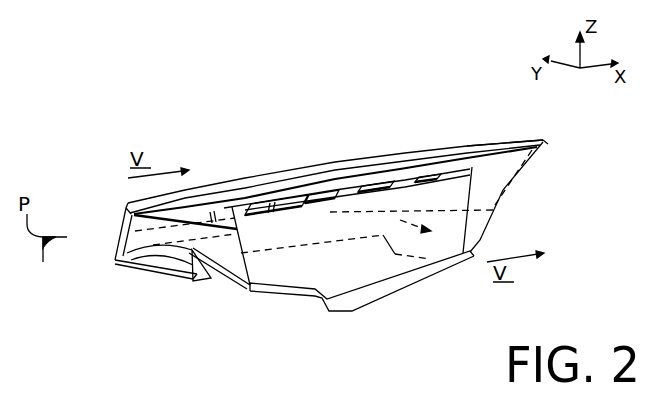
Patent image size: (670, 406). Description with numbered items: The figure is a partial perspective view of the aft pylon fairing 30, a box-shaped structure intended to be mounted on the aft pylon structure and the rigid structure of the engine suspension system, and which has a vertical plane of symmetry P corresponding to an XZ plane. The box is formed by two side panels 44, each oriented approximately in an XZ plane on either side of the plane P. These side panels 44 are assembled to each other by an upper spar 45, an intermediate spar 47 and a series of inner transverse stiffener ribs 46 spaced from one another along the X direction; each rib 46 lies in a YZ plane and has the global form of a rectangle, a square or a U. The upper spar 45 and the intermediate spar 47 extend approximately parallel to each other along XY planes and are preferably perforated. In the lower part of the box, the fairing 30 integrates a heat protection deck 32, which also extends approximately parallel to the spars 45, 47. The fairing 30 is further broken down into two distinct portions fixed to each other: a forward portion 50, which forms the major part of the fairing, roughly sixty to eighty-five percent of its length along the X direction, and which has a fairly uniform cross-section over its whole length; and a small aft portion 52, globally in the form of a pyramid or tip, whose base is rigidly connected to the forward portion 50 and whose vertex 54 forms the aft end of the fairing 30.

The aft pylon fairing 30 is at (164, 74).
The heat protection deck 32 is at (407, 287).
The side panels 44 is at (128, 214).
The upper spar 45 is at (351, 192).
The inner transverse stiffener ribs 46 is at (128, 203).
The intermediate spar 47 is at (442, 271).
The forward portion 50 is at (290, 167).
The aft portion 52 is at (492, 143).
The vertex 54 is at (547, 144).